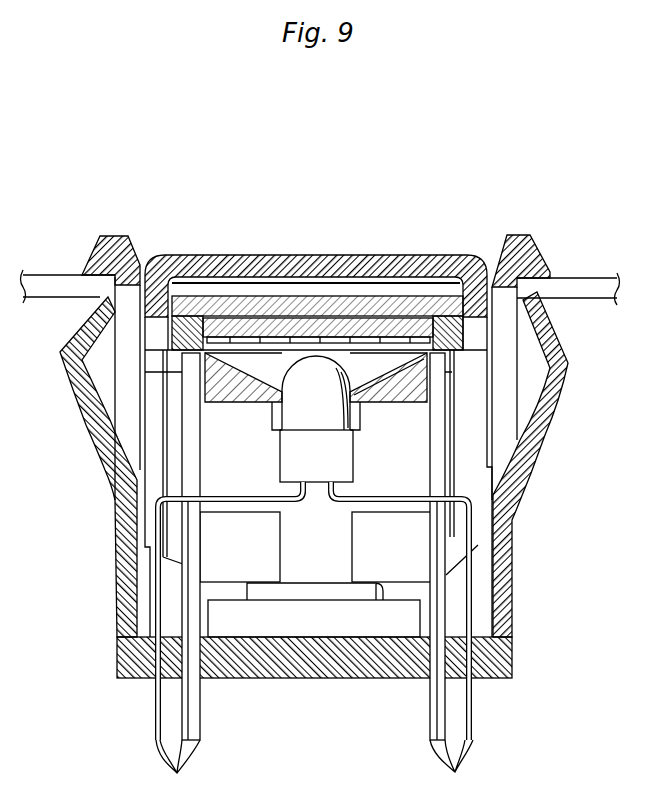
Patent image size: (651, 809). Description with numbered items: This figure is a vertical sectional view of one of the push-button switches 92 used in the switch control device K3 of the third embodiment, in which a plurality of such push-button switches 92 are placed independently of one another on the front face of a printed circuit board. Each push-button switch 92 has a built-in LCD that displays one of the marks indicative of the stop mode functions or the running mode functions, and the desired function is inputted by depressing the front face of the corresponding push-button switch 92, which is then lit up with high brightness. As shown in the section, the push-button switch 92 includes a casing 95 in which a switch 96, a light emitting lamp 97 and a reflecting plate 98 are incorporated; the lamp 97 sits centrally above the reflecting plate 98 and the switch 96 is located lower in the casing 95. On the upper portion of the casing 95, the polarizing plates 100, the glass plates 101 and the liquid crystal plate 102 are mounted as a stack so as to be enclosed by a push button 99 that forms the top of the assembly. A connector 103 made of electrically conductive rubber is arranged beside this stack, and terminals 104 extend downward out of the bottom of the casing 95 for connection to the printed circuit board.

The switch control device K3 is at (490, 163).
The push-button switch 92 is at (398, 183).
The casing 95 is at (536, 258).
The switch 96 is at (400, 620).
The light emitting lamp 97 is at (317, 410).
The reflecting plate 98 is at (420, 386).
The push button 99 is at (350, 262).
The polarizing plates 100 is at (405, 337).
The glass plates 101 is at (242, 300).
The liquid crystal plate 102 is at (297, 330).
The connector 103 is at (458, 322).
The terminals 104 is at (320, 581).